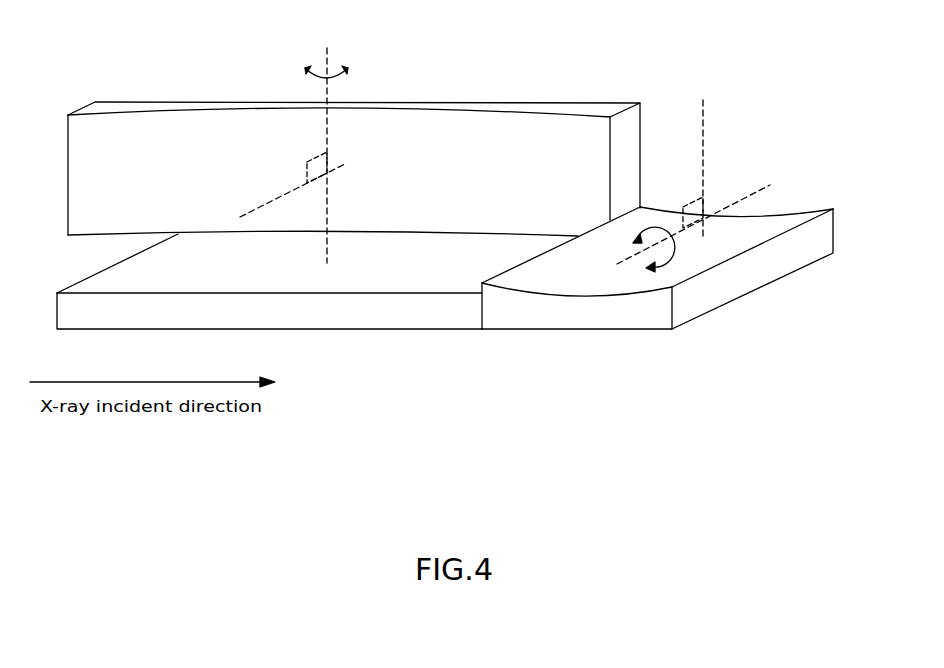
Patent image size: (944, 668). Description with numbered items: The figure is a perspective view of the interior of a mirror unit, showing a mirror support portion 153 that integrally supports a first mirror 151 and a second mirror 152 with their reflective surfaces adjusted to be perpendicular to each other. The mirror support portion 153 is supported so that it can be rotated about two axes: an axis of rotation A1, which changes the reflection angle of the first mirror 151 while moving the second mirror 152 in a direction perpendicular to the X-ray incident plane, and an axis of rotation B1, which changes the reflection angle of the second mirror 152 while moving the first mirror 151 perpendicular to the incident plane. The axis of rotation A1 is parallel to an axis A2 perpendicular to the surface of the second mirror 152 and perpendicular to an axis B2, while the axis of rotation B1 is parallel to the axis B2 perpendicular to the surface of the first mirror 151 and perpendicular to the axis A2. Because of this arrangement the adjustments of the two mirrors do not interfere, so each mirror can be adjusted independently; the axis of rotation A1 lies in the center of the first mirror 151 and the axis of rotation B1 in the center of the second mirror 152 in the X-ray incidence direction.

The first mirror 151 is at (426, 103).
The second mirror 152 is at (804, 212).
The mirror support portion 153 is at (334, 331).
The axis of rotation A1 is at (326, 146).
The axis A2 is at (704, 159).
The axis of rotation B1 is at (680, 233).
The axis B2 is at (277, 191).